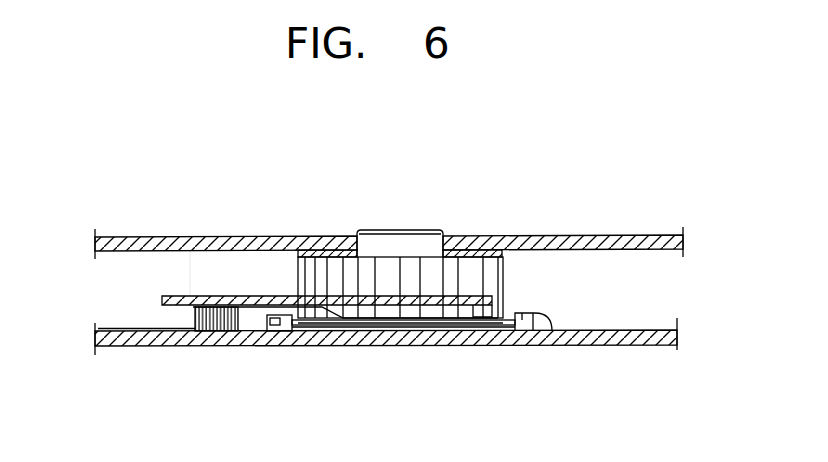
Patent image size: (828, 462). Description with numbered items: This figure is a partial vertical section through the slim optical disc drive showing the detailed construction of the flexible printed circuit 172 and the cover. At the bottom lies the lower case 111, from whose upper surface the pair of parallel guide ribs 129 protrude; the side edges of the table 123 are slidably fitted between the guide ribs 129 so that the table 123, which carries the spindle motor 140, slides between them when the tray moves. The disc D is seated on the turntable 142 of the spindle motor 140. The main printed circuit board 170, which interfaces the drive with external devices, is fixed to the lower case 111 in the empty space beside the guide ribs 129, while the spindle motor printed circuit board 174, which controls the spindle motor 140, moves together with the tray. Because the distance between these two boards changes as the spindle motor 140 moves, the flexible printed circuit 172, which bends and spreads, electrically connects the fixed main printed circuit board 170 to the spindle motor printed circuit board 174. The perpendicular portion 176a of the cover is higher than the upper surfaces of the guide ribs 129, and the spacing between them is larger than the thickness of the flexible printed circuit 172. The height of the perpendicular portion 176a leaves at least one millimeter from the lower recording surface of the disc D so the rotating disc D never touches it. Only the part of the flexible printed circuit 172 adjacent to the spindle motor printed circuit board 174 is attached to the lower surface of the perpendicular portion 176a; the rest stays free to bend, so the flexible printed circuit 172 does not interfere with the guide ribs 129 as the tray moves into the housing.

The disc D is at (197, 237).
The lower case 111 is at (642, 346).
The table 123 is at (477, 322).
The guide ribs 129 is at (259, 331).
The spindle motor 140 is at (333, 262).
The turntable 142 is at (480, 250).
The main printed circuit board 170 is at (118, 331).
The flexible printed circuit 172 is at (253, 306).
The spindle motor printed circuit board 174 is at (389, 322).
The perpendicular portion 176a is at (280, 296).